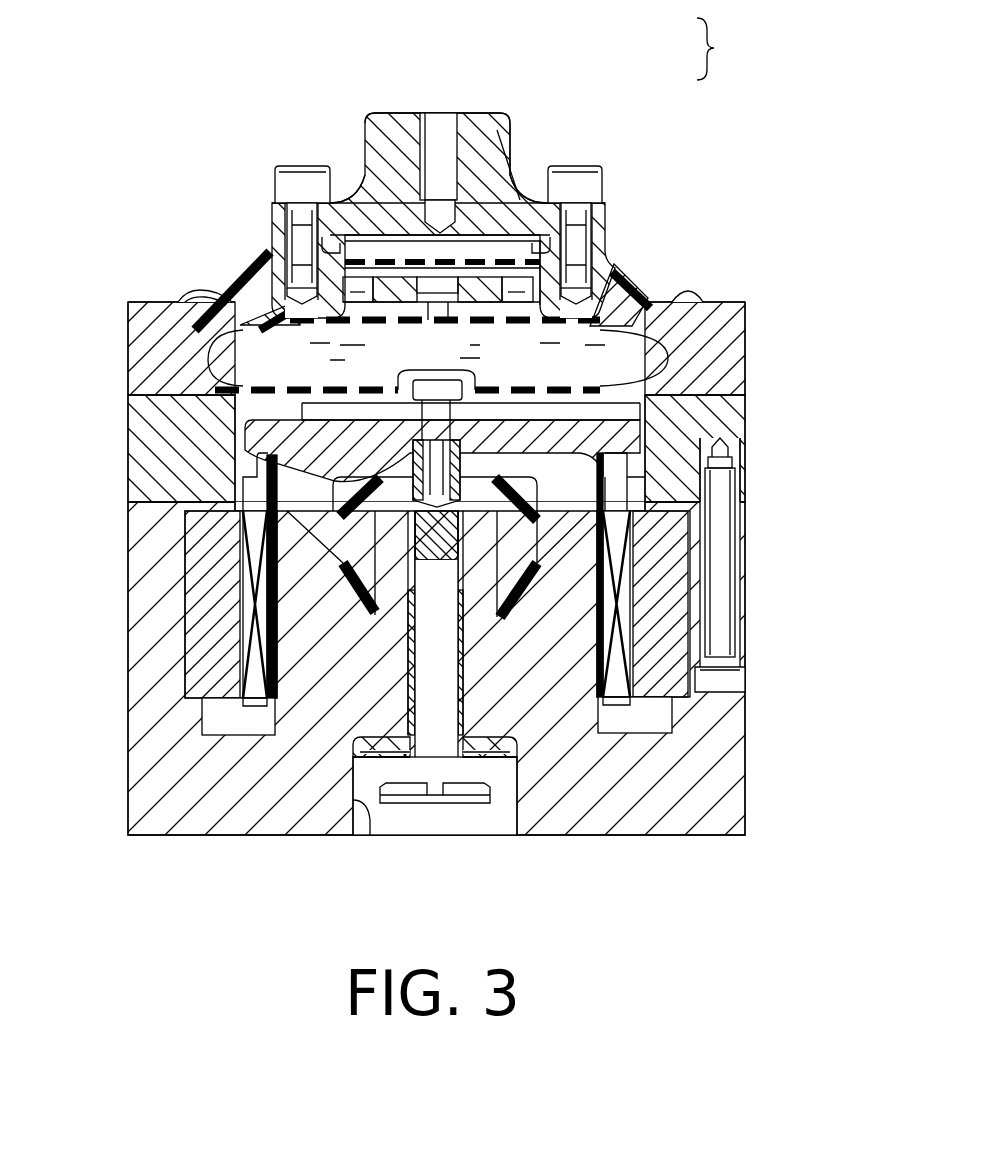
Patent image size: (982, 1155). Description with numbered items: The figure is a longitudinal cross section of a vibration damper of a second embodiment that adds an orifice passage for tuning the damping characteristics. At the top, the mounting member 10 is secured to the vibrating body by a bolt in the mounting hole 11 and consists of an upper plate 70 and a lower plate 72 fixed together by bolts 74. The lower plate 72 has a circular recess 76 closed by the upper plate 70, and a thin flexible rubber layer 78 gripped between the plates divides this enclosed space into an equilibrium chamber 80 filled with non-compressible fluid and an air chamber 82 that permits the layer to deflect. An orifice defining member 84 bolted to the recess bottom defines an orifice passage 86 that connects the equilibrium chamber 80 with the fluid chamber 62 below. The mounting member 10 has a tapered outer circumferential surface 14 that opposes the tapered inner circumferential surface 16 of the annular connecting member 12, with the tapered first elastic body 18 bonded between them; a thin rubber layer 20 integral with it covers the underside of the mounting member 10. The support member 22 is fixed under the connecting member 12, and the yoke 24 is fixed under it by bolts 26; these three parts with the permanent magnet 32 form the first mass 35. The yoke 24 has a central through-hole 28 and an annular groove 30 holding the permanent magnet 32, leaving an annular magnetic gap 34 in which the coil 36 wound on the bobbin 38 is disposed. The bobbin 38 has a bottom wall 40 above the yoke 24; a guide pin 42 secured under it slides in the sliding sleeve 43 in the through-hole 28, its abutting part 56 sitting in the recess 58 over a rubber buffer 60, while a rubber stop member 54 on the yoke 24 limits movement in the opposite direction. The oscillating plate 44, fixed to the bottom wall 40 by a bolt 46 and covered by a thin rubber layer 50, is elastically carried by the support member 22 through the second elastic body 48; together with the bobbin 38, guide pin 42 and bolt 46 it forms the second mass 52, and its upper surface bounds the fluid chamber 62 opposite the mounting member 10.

The mounting member 10 is at (723, 49).
The mounting hole 11 is at (437, 112).
The connecting member 12 is at (245, 350).
The tapered outer circumferential surface 14 is at (282, 290).
The tapered inner circumferential surface 16 is at (207, 320).
The first elastic body 18 is at (623, 327).
The thin rubber layer 20 is at (543, 320).
The support member 22 is at (145, 442).
The yoke 24 is at (145, 768).
The bolts 26 is at (723, 603).
The through-hole 28 is at (367, 733).
The annular groove 30 is at (643, 717).
The permanent magnet 32 is at (197, 638).
The annular magnetic gap 34 is at (245, 580).
The first mass 35 is at (165, 850).
The coil 36 is at (623, 685).
The bobbin 38 is at (660, 458).
The bottom wall 40 is at (583, 453).
The guide pin 42 is at (447, 703).
The sliding sleeve 43 is at (278, 770).
The oscillating plate 44 is at (240, 372).
The bolt 46 is at (460, 395).
The second elastic body 48 is at (640, 292).
The thin rubber layer 50 is at (412, 372).
The second mass 52 is at (250, 735).
The rubber stop member 54 is at (560, 493).
The abutting part 56 is at (408, 797).
The recess 58 is at (368, 812).
The rubber buffer 60 is at (497, 753).
The fluid chamber 62 is at (232, 325).
The upper plate 70 is at (505, 120).
The lower plate 72 is at (600, 245).
The bolts 74 is at (295, 185).
The circular recess 76 is at (372, 255).
The flexible rubber layer 78 is at (488, 260).
The equilibrium chamber 80 is at (397, 265).
The air chamber 82 is at (462, 250).
The orifice defining member 84 is at (470, 250).
The orifice passage 86 is at (360, 328).